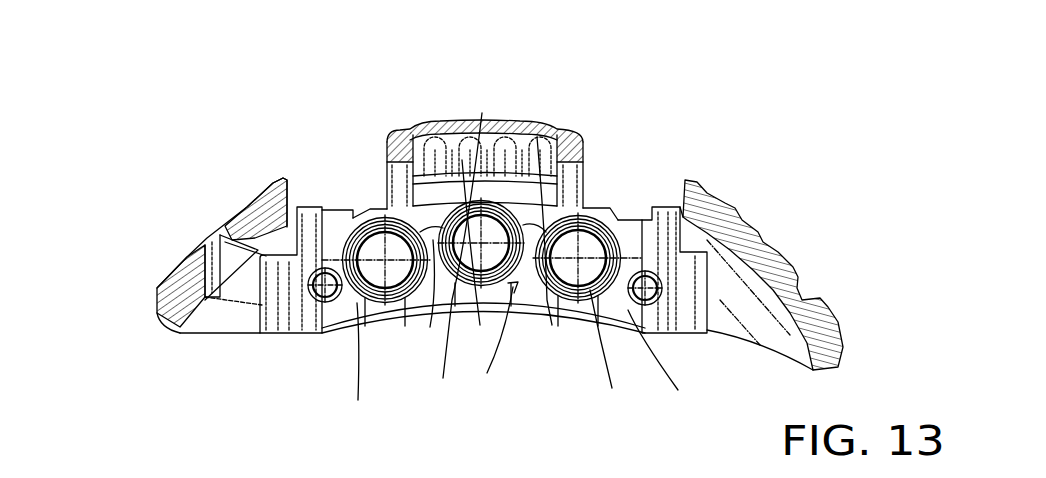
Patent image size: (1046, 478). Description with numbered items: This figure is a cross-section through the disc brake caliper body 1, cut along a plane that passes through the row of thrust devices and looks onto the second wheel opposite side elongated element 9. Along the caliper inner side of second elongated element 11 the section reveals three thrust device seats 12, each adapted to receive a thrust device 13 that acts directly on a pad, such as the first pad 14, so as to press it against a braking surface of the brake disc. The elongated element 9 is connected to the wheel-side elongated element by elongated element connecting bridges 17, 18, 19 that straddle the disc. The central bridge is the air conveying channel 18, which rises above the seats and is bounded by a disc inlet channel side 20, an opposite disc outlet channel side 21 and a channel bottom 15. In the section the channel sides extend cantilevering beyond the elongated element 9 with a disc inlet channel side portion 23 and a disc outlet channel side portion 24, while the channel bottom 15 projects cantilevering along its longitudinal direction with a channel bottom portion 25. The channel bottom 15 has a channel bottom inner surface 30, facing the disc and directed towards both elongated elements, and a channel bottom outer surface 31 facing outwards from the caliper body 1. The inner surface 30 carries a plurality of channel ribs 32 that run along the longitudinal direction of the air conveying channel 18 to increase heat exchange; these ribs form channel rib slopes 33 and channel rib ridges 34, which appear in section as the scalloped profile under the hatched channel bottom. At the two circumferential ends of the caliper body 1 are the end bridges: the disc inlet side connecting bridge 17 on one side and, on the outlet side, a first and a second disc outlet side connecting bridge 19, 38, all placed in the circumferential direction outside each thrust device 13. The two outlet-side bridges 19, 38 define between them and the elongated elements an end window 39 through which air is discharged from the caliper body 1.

The disc brake caliper body 1 is at (742, 156).
The second wheel opposite side elongated element 9 is at (405, 300).
The caliper inner side of second elongated element 11 is at (512, 300).
The thrust device seat 12 is at (493, 271).
The thrust device 13 is at (588, 354).
The first pad 14 is at (347, 247).
The channel bottom 15 is at (457, 122).
The vehicle forward driving direction disc inlet side elongated element connecting b 17 is at (773, 255).
The air conveying channel 18 is at (480, 125).
The vehicle forward driving direction disc outlet side elongated element connecting 19 is at (158, 287).
The disc inlet channel side 20 is at (583, 153).
The disc outlet channel side 21 is at (385, 147).
The disc inlet channel side portion 23 is at (593, 190).
The disc outlet channel side portion 24 is at (380, 188).
The channel bottom portion 25 is at (490, 153).
The channel bottom inner surface 30 is at (453, 122).
The channel bottom outer surface 31 is at (450, 128).
The channel ribs 32 is at (505, 125).
The channel rib slopes 33 is at (467, 122).
The channel rib ridges 34 is at (457, 122).
The second vehicle forward driving direction disc outlet side elongated element conn 38 is at (262, 192).
The end window 39 is at (198, 247).